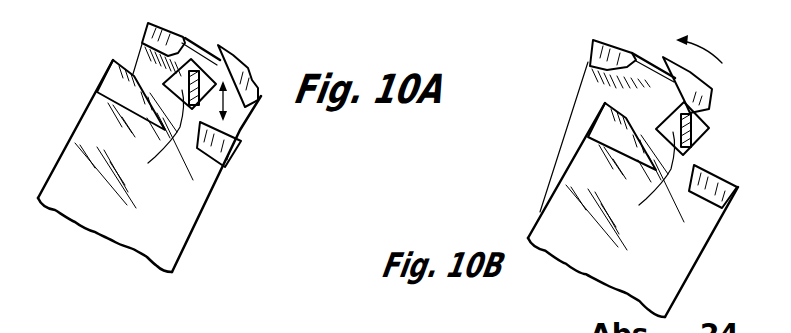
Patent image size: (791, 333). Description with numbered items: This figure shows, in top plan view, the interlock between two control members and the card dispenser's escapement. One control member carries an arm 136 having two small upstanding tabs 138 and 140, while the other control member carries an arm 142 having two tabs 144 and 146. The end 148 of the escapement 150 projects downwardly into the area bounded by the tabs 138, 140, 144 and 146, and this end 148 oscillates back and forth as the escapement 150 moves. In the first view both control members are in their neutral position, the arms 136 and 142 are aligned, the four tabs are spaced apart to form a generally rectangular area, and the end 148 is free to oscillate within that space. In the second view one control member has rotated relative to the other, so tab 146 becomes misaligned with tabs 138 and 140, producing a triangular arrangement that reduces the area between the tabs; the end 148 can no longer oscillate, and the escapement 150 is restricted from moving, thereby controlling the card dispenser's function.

In FIG. 10A, the arm 136 is at (183, 220).
In FIG. 10B, the arm 136 is at (563, 206).
In FIG. 10A, the tab 138 is at (107, 79).
In FIG. 10B, the tab 138 is at (525, 170).
In FIG. 10A, the tab 140 is at (233, 158).
In FIG. 10B, the tab 140 is at (705, 200).
In FIG. 10A, the arm 142 is at (245, 123).
In FIG. 10B, the arm 142 is at (585, 100).
In FIG. 10A, the tab 144 is at (172, 36).
In FIG. 10B, the tab 144 is at (591, 50).
In FIG. 10A, the tab 146 is at (212, 67).
In FIG. 10B, the tab 146 is at (704, 80).
In FIG. 10A, the end 148 is at (149, 165).
In FIG. 10B, the end 148 is at (639, 207).
In FIG. 10A, the escapement 150 is at (202, 83).
In FIG. 10B, the escapement 150 is at (700, 140).